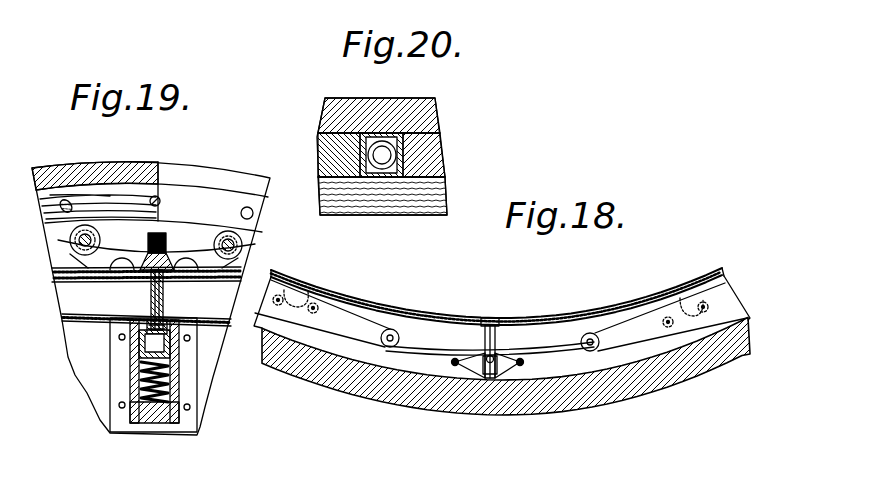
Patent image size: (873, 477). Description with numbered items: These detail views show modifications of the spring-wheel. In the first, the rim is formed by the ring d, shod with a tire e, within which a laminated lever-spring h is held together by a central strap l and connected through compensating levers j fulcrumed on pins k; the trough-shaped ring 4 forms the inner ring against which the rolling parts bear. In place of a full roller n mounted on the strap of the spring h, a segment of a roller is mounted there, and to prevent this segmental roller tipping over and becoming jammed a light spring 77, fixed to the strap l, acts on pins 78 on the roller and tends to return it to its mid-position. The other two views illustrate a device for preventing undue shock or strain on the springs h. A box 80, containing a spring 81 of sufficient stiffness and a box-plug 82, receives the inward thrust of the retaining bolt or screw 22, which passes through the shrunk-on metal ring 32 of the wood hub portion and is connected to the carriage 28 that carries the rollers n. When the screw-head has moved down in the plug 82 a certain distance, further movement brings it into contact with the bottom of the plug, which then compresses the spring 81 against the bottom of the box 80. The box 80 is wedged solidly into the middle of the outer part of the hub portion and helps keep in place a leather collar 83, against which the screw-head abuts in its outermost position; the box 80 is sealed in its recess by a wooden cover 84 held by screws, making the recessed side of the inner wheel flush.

In FIG. 19, the ring d is at (89, 194).
In FIG. 18, the ring d is at (396, 376).
In FIG. 19, the tire e is at (212, 178).
In FIG. 19, the carriage 28 is at (187, 250).
In FIG. 19, the roller n is at (55, 239).
In FIG. 19, the laminated lever-spring h is at (53, 280).
In FIG. 19, the retaining bolt or screw 22 is at (172, 297).
In FIG. 18, the retaining bolt or screw 22 is at (486, 331).
In FIG. 19, the leather collar 83 is at (126, 324).
In FIG. 19, the shrunk-on metal ring 32 is at (63, 316).
In FIG. 19, the spring 81 is at (179, 376).
In FIG. 20, the spring 81 is at (438, 143).
In FIG. 19, the box-plug 82 is at (137, 348).
In FIG. 19, the box 80 is at (130, 371).
In FIG. 20, the box 80 is at (352, 157).
In FIG. 20, the wooden cover 84 is at (382, 212).
In FIG. 18, the trough-shaped ring 4 is at (373, 309).
In FIG. 18, the compensating lever j is at (351, 320).
In FIG. 18, the pin or bolt k is at (305, 296).
In FIG. 18, the central strap l is at (511, 331).
In FIG. 18, the light spring 77 is at (512, 352).
In FIG. 18, the pin 78 is at (522, 364).